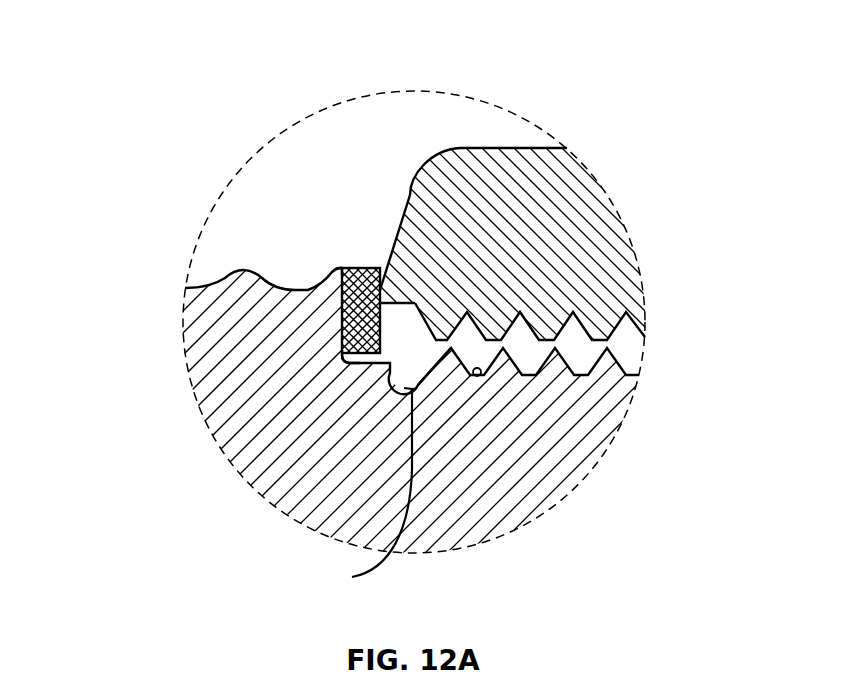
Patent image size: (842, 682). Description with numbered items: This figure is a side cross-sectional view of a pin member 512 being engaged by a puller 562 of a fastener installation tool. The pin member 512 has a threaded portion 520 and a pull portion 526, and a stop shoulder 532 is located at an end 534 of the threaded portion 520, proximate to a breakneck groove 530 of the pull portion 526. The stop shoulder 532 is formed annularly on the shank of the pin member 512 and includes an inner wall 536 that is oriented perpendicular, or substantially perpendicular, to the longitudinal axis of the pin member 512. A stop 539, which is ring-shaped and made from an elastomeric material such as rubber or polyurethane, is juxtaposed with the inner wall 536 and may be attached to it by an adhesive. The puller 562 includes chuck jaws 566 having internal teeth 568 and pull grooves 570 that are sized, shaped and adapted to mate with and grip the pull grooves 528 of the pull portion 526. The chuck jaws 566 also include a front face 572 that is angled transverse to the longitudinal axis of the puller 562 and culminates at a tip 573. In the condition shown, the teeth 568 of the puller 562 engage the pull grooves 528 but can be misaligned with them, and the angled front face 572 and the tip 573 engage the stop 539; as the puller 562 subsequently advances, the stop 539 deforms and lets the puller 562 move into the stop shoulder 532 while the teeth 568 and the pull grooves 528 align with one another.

The pin member 512 is at (545, 475).
The threaded portion 520 is at (212, 408).
The pull portion 526 is at (598, 418).
The pull grooves 528 is at (476, 376).
The breakneck groove 530 is at (356, 491).
The stop shoulder 532 is at (313, 307).
The end of threaded portion 534 is at (337, 267).
The inner wall 536 is at (341, 322).
The stop 539 is at (362, 332).
The puller 562 is at (487, 148).
The chuck jaws 566 is at (548, 185).
The internal teeth 568 is at (598, 322).
The pull grooves of puller 570 is at (574, 316).
The front face 572 is at (408, 190).
The tip 573 is at (380, 270).